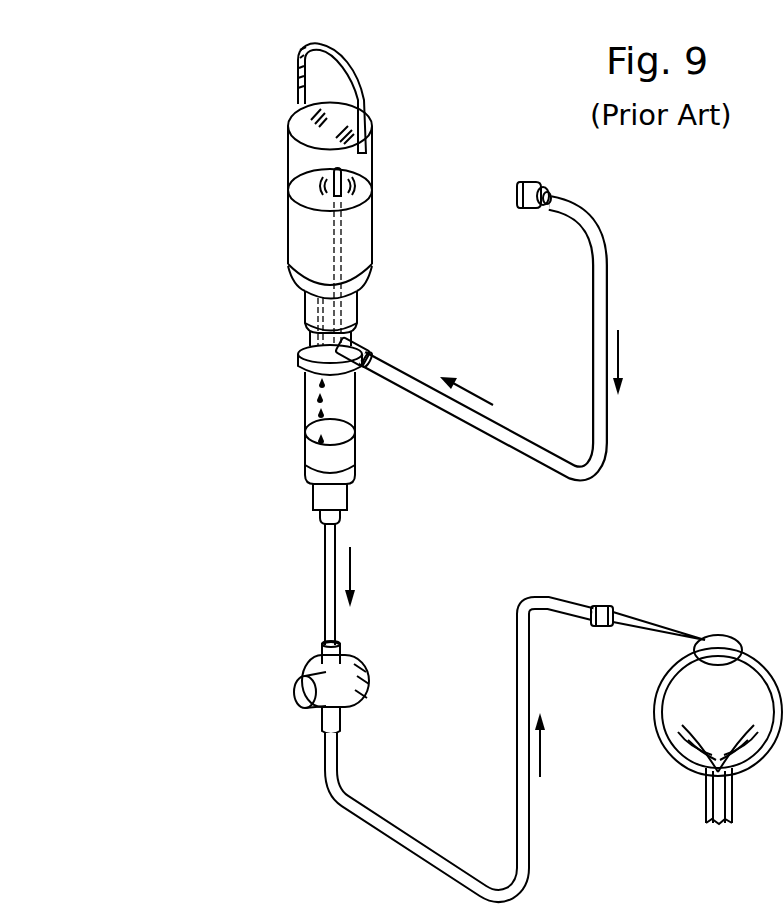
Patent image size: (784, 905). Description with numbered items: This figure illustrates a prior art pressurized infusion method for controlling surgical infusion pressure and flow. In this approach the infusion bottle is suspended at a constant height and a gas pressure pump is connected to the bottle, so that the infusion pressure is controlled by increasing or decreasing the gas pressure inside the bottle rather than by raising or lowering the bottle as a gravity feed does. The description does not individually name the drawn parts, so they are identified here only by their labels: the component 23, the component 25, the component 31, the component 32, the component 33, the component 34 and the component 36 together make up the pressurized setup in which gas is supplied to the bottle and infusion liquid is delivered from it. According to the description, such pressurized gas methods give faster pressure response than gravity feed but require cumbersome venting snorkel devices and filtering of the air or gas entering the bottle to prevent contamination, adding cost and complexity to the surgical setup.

The drip chamber 23 is at (309, 411).
The neck of reservoir 25 is at (354, 306).
The connector 31 is at (524, 183).
The tube 32 is at (512, 440).
The tube 33 is at (325, 561).
The valve 34 is at (351, 663).
The needle / cannula 36 is at (643, 624).